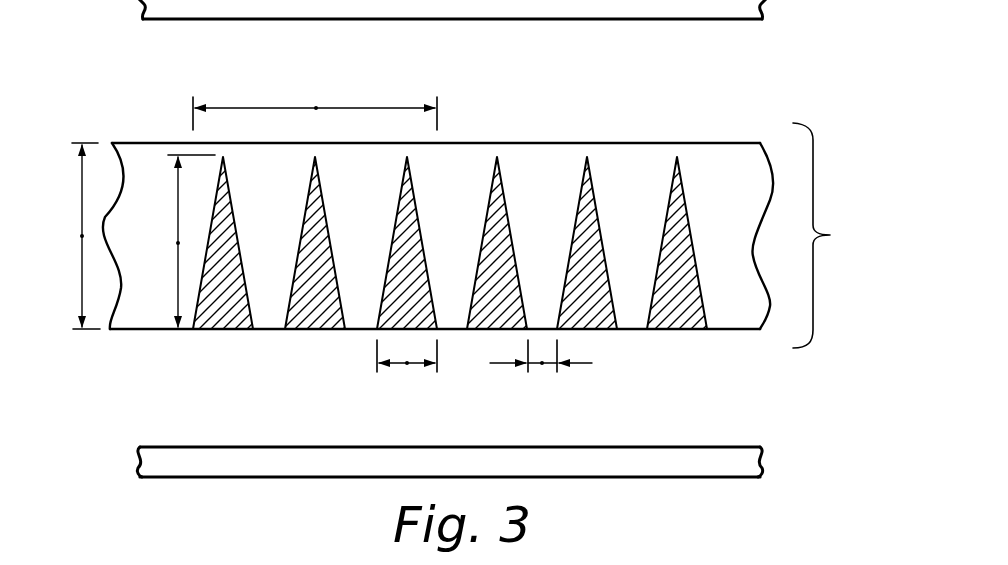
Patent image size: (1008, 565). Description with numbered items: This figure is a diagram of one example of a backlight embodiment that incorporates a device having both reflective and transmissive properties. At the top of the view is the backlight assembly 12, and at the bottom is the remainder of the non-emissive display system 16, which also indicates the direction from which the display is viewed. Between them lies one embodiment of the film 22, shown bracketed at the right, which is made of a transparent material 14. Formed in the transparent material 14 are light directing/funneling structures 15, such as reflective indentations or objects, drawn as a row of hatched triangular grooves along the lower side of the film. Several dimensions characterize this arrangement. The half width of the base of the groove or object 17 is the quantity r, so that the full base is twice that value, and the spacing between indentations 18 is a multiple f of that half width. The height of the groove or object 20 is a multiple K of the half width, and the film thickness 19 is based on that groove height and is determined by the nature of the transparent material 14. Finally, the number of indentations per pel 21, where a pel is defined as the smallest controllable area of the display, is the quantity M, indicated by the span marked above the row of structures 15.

The backlight assembly 12 is at (487, 20).
The transparent material 14 is at (725, 178).
The light directing/funneling structures 15 is at (598, 208).
The remainder of the non-emissive display system 16 is at (232, 447).
The half width of base of the groove 17 is at (407, 364).
The spacing between indentations 18 is at (542, 364).
The film thickness 19 is at (82, 236).
The height of groove 20 is at (178, 243).
The number of indentations per pel 21 is at (316, 108).
The film 22 is at (831, 235).